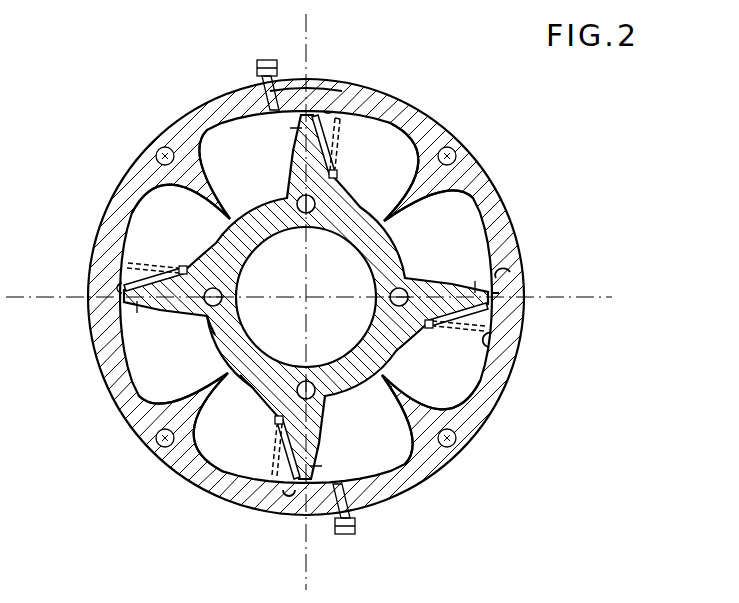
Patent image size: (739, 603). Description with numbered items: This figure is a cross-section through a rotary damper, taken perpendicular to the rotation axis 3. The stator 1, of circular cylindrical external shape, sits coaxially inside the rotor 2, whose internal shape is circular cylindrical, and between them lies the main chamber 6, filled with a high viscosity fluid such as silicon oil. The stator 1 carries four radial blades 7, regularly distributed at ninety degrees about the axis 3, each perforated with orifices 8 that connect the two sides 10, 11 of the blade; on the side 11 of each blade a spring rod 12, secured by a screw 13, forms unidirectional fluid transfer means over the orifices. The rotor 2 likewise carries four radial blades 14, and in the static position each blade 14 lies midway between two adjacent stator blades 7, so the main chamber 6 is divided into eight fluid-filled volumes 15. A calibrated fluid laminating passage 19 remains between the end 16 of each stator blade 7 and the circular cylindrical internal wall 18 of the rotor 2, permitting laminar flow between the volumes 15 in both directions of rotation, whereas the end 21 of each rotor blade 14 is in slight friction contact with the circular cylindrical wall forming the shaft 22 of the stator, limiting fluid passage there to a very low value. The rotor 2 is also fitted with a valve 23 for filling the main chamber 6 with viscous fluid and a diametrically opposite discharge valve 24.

The stator 1 is at (272, 264).
The rotor 2 is at (313, 285).
The rotation axis 3 is at (306, 300).
The main chamber 6 is at (140, 240).
The radial blades 7 is at (270, 226).
The orifices 8 is at (120, 303).
The side 10 is at (304, 82).
The side 11 is at (320, 113).
The spring rod 12 is at (350, 122).
The screw 13 is at (318, 232).
The radial blades 14 is at (197, 193).
The volumes 15 is at (255, 171).
The end 16 is at (500, 273).
The circular cylindrical internal wall 18 is at (494, 343).
The fluid laminating passage 19 is at (500, 292).
The end 21 is at (247, 380).
The shaft 22 is at (225, 373).
The valve 23 is at (355, 524).
The discharge valve 24 is at (265, 60).